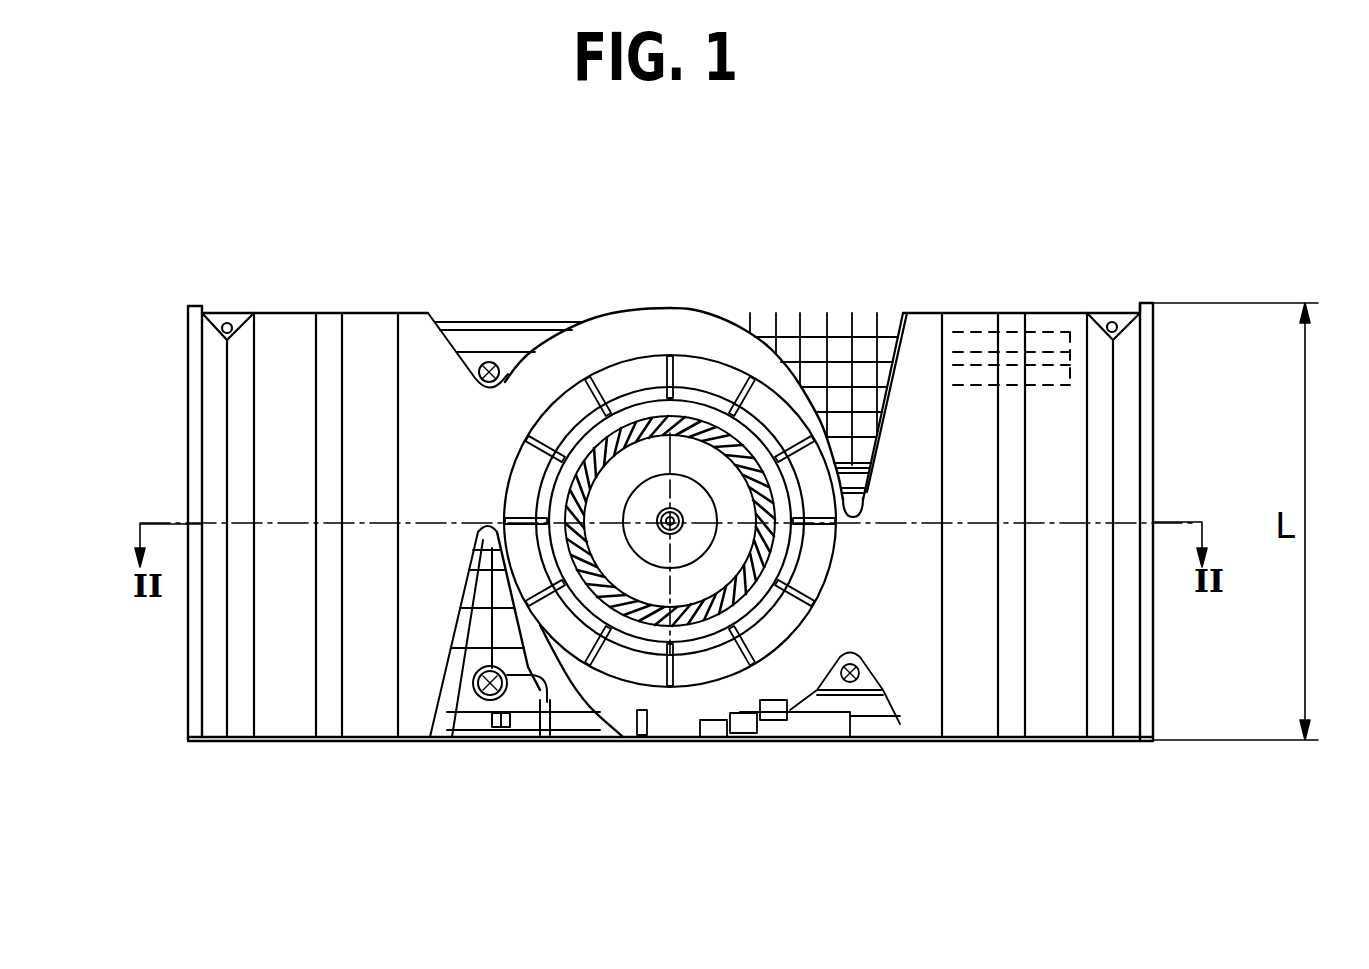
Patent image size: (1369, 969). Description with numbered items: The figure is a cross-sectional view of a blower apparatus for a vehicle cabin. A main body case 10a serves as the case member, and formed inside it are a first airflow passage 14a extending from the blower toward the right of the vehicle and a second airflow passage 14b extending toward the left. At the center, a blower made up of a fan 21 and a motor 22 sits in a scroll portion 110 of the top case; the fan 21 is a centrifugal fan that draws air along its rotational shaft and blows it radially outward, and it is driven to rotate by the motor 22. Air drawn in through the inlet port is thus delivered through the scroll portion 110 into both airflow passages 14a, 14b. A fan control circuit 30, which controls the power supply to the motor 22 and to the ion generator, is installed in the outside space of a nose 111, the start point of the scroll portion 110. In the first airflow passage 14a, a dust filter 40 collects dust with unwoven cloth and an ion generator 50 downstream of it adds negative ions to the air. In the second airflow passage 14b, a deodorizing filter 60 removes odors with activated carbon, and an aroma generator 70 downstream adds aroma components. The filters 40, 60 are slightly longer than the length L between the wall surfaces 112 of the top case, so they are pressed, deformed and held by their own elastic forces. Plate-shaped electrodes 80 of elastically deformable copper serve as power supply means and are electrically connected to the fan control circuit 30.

The main body case 10a is at (440, 290).
The first airflow passage 14a is at (880, 563).
The second airflow passage 14b is at (447, 385).
The fan 21 is at (783, 613).
The motor 22 is at (667, 540).
The fan control circuit 30 is at (838, 362).
The dust filter 40 is at (973, 713).
The ion generator 50 is at (1060, 688).
The deodorizing filter 60 is at (362, 718).
The aroma generator 70 is at (277, 717).
The electrodes 80 is at (923, 340).
The scroll portion 110 is at (620, 347).
The nose 111 is at (790, 363).
The wall surfaces 112 is at (1010, 313).